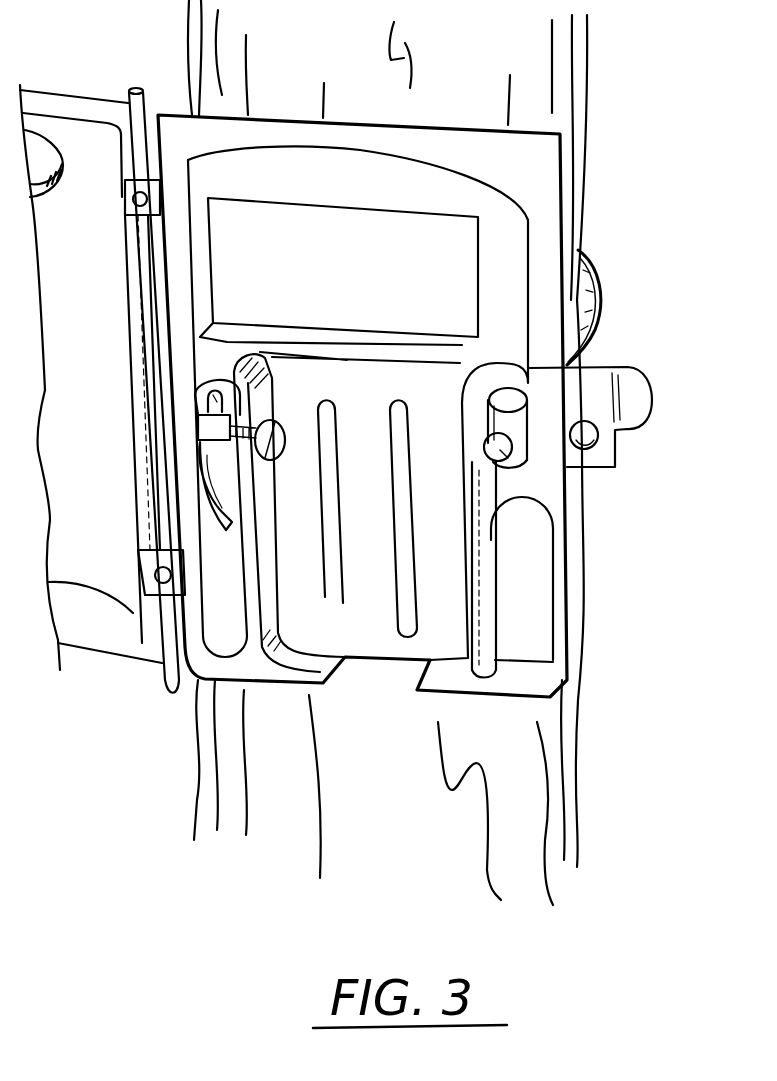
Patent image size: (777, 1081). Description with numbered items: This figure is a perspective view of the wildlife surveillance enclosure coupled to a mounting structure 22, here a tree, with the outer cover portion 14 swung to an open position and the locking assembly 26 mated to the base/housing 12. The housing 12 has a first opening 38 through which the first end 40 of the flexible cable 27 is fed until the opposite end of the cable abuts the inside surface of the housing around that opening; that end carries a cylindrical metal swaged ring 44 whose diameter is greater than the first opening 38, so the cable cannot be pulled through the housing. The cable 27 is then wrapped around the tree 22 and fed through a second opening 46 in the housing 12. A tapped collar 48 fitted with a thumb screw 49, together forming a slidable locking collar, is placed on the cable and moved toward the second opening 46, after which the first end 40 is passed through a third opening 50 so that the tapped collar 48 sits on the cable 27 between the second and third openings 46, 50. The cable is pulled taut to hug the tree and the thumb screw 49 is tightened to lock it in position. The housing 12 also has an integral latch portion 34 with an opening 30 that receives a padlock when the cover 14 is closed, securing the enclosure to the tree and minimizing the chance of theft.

The base/housing 12 is at (558, 183).
The outer cover portion 14 is at (72, 100).
The mounting structure 22 is at (560, 73).
The locking assembly 26 is at (228, 470).
The flexible cable 27 is at (600, 293).
The opening 30 is at (588, 438).
The integral latch portion 34 is at (640, 370).
The first opening 38 is at (528, 422).
The first end 40 is at (530, 408).
The swaged ring 44 is at (497, 464).
The second opening 46 is at (210, 405).
The tapped collar 48 is at (200, 424).
The thumb screw 49 is at (282, 422).
The third opening 50 is at (213, 508).